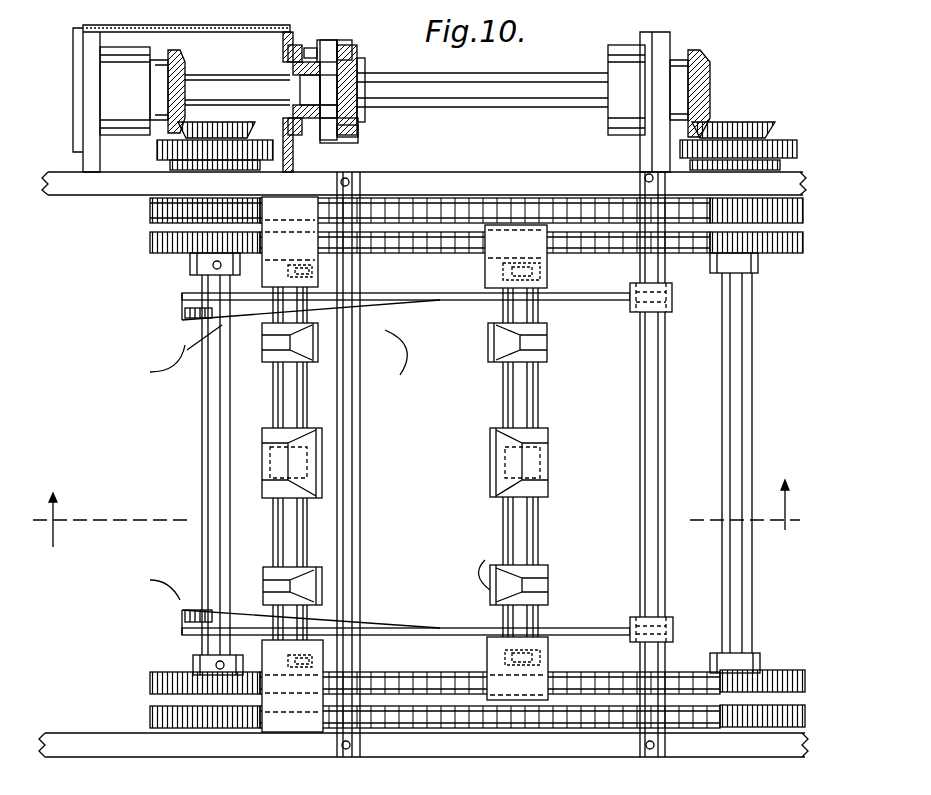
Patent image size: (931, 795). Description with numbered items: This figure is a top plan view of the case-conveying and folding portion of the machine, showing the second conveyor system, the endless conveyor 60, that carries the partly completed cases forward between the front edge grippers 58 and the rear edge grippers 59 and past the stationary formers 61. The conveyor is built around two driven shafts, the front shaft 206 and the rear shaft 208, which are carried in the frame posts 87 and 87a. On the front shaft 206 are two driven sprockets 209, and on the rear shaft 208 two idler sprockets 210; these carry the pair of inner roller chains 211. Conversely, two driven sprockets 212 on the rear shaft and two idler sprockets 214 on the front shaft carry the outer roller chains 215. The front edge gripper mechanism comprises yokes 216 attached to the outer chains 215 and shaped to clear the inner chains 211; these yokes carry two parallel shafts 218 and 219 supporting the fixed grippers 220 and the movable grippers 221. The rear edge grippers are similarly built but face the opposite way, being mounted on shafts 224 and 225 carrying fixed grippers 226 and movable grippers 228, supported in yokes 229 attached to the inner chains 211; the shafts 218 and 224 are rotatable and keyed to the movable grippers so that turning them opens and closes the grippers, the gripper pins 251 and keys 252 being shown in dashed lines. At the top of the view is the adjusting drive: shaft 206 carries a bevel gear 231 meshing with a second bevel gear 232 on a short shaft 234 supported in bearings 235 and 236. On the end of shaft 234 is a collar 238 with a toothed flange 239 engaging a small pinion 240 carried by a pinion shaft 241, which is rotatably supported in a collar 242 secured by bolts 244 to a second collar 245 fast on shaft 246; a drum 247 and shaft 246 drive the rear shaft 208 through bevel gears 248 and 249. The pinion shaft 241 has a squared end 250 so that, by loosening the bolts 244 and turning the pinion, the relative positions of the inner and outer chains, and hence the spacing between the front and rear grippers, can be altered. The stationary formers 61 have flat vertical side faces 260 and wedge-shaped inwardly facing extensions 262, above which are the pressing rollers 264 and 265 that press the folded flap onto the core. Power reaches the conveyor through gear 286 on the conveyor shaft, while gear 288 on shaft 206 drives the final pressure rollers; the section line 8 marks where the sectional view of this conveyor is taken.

The section line 8 is at (415, 514).
The front edge grippers 58 is at (261, 361).
The rear edge grippers 59 is at (556, 357).
The endless conveyor 60 is at (650, 610).
The stationary formers 61 is at (586, 308).
The frame post 87 is at (558, 178).
The frame post 87a is at (600, 745).
The front shaft 206 is at (202, 402).
The rear shaft 208 is at (742, 416).
The driven sprockets 209 is at (185, 262).
The idler sprockets 210 is at (760, 250).
The inner roller chains 211 is at (490, 463).
The driven sprockets 212 is at (740, 745).
The idler sprockets 214 is at (235, 200).
The outer roller chains 215 is at (470, 732).
The yokes 216 is at (292, 200).
The shaft 218 is at (273, 406).
The shaft 219 is at (307, 412).
The fixed grippers 220 is at (322, 470).
The movable grippers 221 is at (308, 490).
The shaft 224 is at (535, 535).
The shaft 225 is at (505, 518).
The fixed grippers 226 is at (545, 560).
The movable grippers 228 is at (530, 580).
The yokes 229 is at (547, 262).
The bevel gear 231 is at (218, 128).
The second bevel gear 232 is at (182, 56).
The short shaft 234 is at (225, 78).
The bearing 235 is at (134, 91).
The bearing 236 is at (288, 62).
The collar 238 is at (314, 122).
The toothed flange 239 is at (340, 143).
The small pinion 240 is at (340, 42).
The pinion shaft 241 is at (352, 45).
The collar 242 is at (325, 40).
The bolts 244 is at (358, 132).
The second collar 245 is at (365, 68).
The shaft 246 is at (478, 66).
The drum 247 is at (626, 90).
The bevel gear 248 is at (700, 52).
The bevel gear 249 is at (725, 122).
The squared end 250 is at (295, 45).
The pin 251 is at (292, 265).
The key 252 is at (315, 272).
The flat vertical side faces 260 is at (445, 302).
The wedge-shaped inwardly facing extensions 262 is at (310, 462).
The pressing roller 264 is at (355, 310).
The pressing roller 265 is at (192, 320).
The gear 286 is at (785, 140).
The gear 288 is at (157, 153).